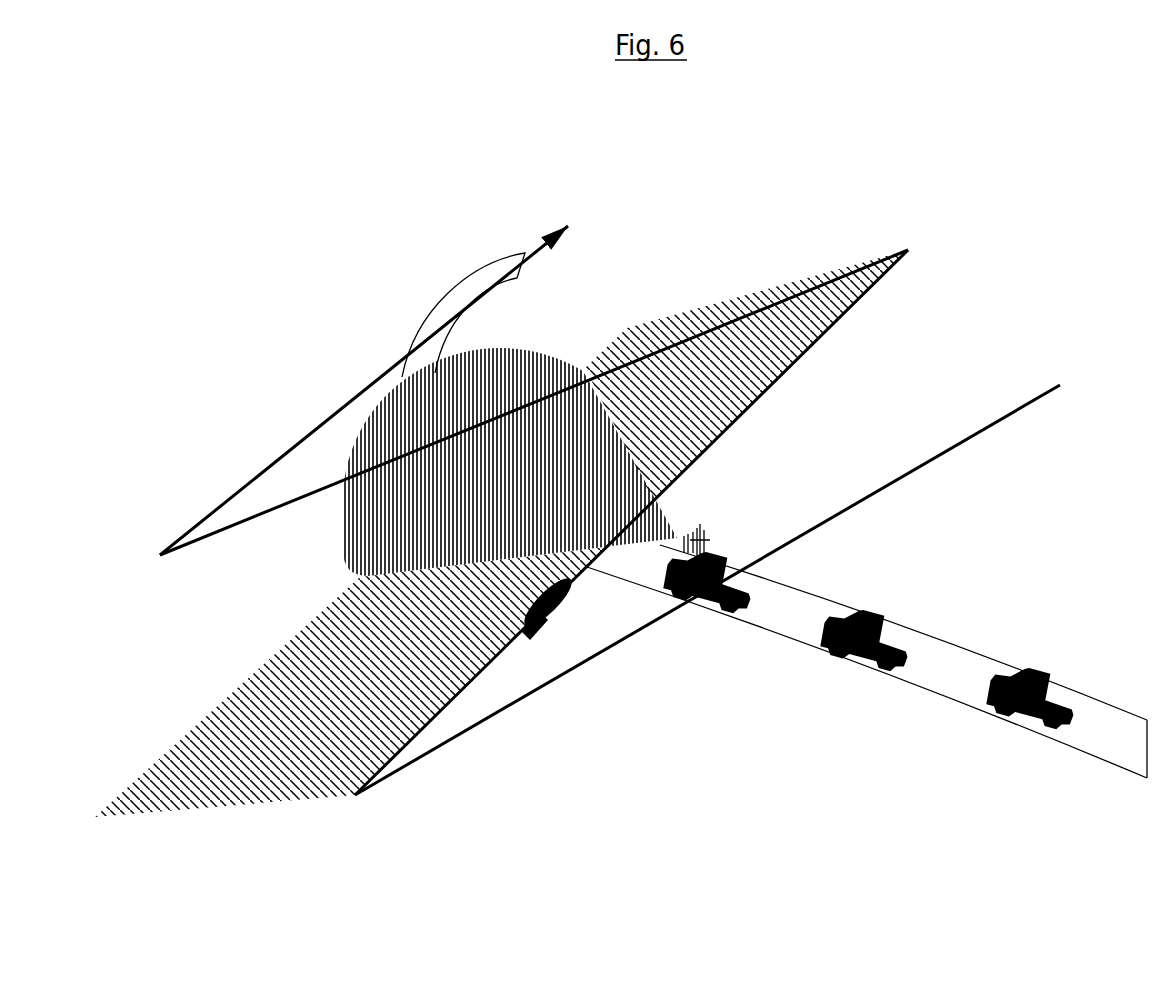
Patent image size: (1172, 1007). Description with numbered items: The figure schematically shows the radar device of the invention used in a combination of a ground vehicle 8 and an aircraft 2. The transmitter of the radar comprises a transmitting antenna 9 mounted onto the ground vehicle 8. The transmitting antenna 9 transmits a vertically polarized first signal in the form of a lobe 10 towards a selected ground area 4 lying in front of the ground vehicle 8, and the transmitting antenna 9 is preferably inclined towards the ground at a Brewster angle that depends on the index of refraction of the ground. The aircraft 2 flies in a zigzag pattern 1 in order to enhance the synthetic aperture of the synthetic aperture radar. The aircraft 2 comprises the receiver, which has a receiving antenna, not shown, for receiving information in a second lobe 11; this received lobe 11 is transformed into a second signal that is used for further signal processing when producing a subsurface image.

The zigzag pattern 1 is at (978, 432).
The aircraft 2 is at (552, 618).
The selected ground area 4 is at (458, 490).
The ground vehicle 8 is at (722, 602).
The transmitting antenna 9 is at (708, 533).
The lobe 10 is at (512, 383).
The second lobe 11 is at (284, 762).